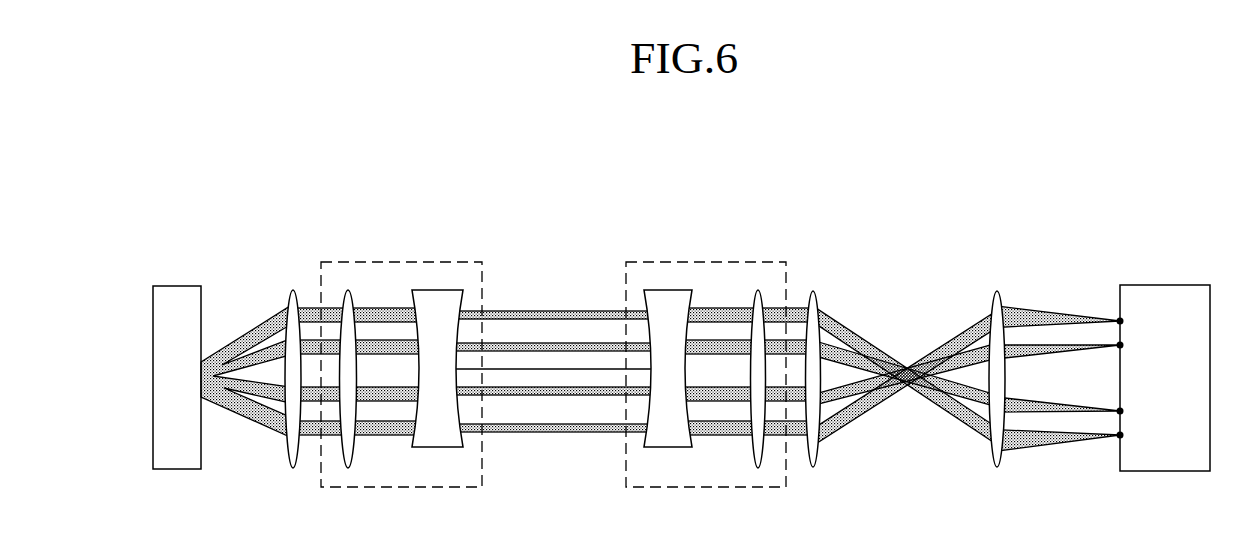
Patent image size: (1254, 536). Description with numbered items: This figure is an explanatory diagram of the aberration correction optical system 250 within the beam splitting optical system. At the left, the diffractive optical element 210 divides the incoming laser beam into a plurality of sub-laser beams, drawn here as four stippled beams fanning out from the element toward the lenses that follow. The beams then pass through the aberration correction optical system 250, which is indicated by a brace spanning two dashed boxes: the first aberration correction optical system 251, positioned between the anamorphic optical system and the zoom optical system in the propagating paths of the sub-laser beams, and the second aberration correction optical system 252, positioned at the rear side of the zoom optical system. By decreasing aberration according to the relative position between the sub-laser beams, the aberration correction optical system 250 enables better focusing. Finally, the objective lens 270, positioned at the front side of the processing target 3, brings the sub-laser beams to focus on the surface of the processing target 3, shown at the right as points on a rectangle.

The diffractive optical element 210 is at (177, 286).
The aberration correction optical system 250 is at (382, 213).
The first aberration correction optical system 251 is at (393, 260).
The second aberration correction optical system 252 is at (711, 260).
The objective lens 270 is at (997, 291).
The processing target 3 is at (1164, 285).